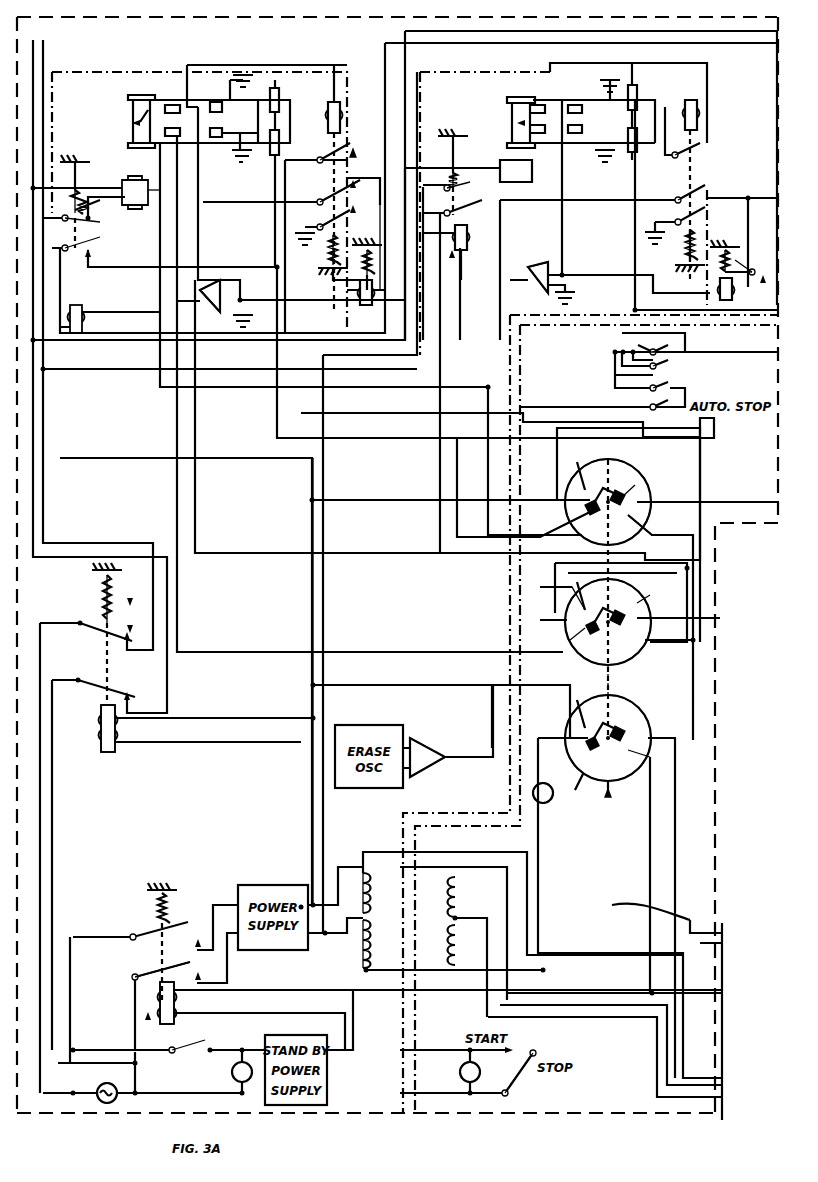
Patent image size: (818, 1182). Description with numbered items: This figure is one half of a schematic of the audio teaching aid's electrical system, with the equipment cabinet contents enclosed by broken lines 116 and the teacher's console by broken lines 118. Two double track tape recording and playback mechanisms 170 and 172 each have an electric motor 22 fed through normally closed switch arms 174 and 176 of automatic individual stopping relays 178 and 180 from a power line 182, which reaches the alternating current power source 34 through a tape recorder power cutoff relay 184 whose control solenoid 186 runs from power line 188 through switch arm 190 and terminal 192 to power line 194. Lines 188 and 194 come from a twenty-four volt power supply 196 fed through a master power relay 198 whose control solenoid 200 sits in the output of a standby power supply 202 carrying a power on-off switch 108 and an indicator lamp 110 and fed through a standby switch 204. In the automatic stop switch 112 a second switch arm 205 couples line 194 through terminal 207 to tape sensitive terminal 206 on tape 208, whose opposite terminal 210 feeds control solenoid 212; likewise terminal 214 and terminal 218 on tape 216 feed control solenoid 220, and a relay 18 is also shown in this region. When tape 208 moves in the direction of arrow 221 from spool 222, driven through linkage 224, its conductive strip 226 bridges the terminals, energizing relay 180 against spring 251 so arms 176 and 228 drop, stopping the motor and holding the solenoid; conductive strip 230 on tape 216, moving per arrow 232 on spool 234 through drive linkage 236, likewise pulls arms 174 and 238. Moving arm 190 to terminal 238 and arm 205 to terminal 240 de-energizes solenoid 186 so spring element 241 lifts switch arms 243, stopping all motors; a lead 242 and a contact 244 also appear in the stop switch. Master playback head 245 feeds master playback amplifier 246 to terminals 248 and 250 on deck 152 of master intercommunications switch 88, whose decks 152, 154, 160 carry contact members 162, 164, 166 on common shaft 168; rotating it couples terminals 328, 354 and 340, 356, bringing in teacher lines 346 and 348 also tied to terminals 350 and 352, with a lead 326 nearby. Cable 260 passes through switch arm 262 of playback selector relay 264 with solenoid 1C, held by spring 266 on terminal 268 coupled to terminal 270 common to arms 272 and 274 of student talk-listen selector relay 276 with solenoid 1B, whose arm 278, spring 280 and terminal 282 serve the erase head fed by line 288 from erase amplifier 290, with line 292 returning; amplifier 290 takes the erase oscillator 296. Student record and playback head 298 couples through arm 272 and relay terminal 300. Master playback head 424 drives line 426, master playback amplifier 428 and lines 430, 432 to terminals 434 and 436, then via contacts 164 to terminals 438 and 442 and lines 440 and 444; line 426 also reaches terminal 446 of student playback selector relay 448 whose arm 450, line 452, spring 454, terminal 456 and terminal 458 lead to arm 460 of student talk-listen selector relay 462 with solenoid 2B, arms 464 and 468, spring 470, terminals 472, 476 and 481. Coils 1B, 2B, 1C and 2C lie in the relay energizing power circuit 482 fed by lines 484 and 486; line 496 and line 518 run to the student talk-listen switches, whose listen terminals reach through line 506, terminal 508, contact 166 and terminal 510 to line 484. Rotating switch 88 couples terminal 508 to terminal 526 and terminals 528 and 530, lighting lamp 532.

The relay 18 is at (685, 118).
The electric motor 22 is at (156, 188).
The alternating current power source 34 is at (117, 1098).
The master intercommunications switch 88 is at (605, 800).
The power on-off switch 108 is at (560, 1046).
The indicator lamp 110 is at (460, 1075).
The automatic stop switch 112 is at (595, 375).
The broken lines 116 is at (740, 315).
The broken lines 118 is at (633, 1108).
The deck 152 is at (646, 536).
The deck 154 is at (637, 657).
The deck 160 is at (595, 782).
The electrical conductive contact members 162 is at (608, 502).
The electrical contact members 164 is at (608, 622).
The electrical contact members 166 is at (608, 738).
The common shaft 168 is at (610, 688).
The double track tape recording and playback mechanism 170 is at (470, 118).
The double track tape recording and playback mechanism 172 is at (100, 125).
The switch arm 174 is at (100, 218).
The switch arm 176 is at (477, 193).
The automatic individual tape recorder stopping relay 178 is at (95, 350).
The automatic individual tape recorder stopping relay 180 is at (450, 258).
The 110-volt power line 182 is at (50, 508).
The tape recorder power cutoff relay 184 is at (118, 756).
The control solenoid 186 is at (102, 758).
The 24-volt power line 188 is at (323, 582).
The switch arm 190 is at (680, 388).
The terminal 192 is at (650, 390).
The power line 194 is at (539, 354).
The 24-volt power supply 196 is at (264, 871).
The master power relay 198 is at (148, 1020).
The control solenoid 200 is at (182, 1019).
The standby 24-volt power supply 202 is at (334, 1070).
The standby switch 204 is at (218, 1050).
The second switch arm 205 is at (700, 352).
The tape sensitive terminal 206 is at (620, 160).
The terminal 207 is at (662, 348).
The dual track recorder and playback tape 208 is at (637, 100).
The tape sensitive terminal 210 is at (636, 86).
The control solenoid 212 is at (452, 236).
The tape sensitive terminal 214 is at (282, 142).
The dual track recorder and playback tape 216 is at (279, 104).
The tape sensitive terminal 218 is at (274, 96).
The control solenoid 220 is at (90, 324).
The arrow 221 is at (503, 106).
The spool 222 is at (501, 86).
The linkage 224 is at (520, 152).
The electrically conductive material 226 is at (615, 128).
The switch arm 228 is at (155, 305).
The electrically conductive strip 230 is at (258, 132).
The arrow 232 is at (132, 125).
The spool 234 is at (124, 92).
The drive linkage 236 is at (132, 170).
The switch arm 238 is at (94, 238).
The terminal 240 is at (672, 364).
The spring element 241 is at (97, 604).
The lead 242 is at (622, 338).
The switch arms 243 is at (88, 636).
The contact 244 is at (675, 380).
The master playback head 245 is at (588, 94).
The master playback amplifier 246 is at (539, 268).
The terminal 248 is at (562, 537).
The terminal 250 is at (642, 480).
The spring 251 is at (454, 170).
The cable 260 is at (770, 210).
The moveable switch arm 262 is at (706, 293).
The playback selector switch relay 264 is at (760, 283).
The spring 266 is at (732, 262).
The terminal 268 is at (698, 274).
The terminal 270 is at (713, 166).
The moveable switch arm 272 is at (668, 166).
The moveable switch arm 274 is at (672, 220).
The student talk-listen selector relay 276 is at (716, 92).
The moveable switch arm 278 is at (640, 134).
The spring 280 is at (678, 246).
The terminal 282 is at (708, 115).
The line 288 is at (480, 608).
The erase amplifier 290 is at (430, 745).
The line 292 is at (483, 776).
The erase oscillator 296 is at (395, 725).
The student record and playback head 298 is at (601, 154).
The relay terminal 300 is at (719, 142).
The lead 326 is at (680, 432).
The terminal 328 is at (575, 510).
The terminal 340 is at (632, 494).
The line 346 is at (705, 950).
The line 348 is at (690, 920).
The terminal 350 is at (560, 592).
The terminal 352 is at (645, 628).
The terminal 354 is at (585, 490).
The terminal 356 is at (640, 512).
The master playback head 424 is at (215, 100).
The line 426 is at (198, 239).
The master playback amplifier 428 is at (206, 316).
The line 430 is at (194, 434).
The line 432 is at (165, 414).
The terminal 434 is at (642, 600).
The terminal 436 is at (570, 640).
The terminal 438 is at (640, 612).
The line 440 is at (703, 620).
The terminal 442 is at (565, 621).
The line 444 is at (688, 425).
The terminal 446 is at (356, 308).
The student playback selector relay 448 is at (366, 304).
The moveable switch arm 450 is at (348, 299).
The line 452 is at (402, 70).
The spring 454 is at (366, 253).
The second terminal 456 is at (346, 284).
The terminal 458 is at (348, 210).
The moveable switch arm 460 is at (321, 223).
The student talk-listen selector relay 462 is at (355, 98).
The moveable switch arm 464 is at (321, 201).
The moveable switch arm 468 is at (323, 165).
The spring 470 is at (326, 268).
The terminal 472 is at (350, 162).
The terminal 476 is at (345, 135).
The terminal 481 is at (316, 245).
The 24-volt relay energizing power circuit 482 is at (364, 834).
The line 484 is at (540, 970).
The line 486 is at (694, 998).
The line 496 is at (657, 1076).
The line 506 is at (712, 1065).
The terminal 508 is at (636, 736).
The terminal 510 is at (640, 703).
The line 518 is at (706, 1092).
The terminal 526 is at (630, 770).
The terminal 528 is at (568, 729).
The terminal 530 is at (569, 705).
The lamp 532 is at (544, 806).
The solenoid 1B is at (422, 944).
The solenoid 1C is at (736, 290).
The solenoid 2B is at (328, 117).
The solenoid 2C is at (430, 552).